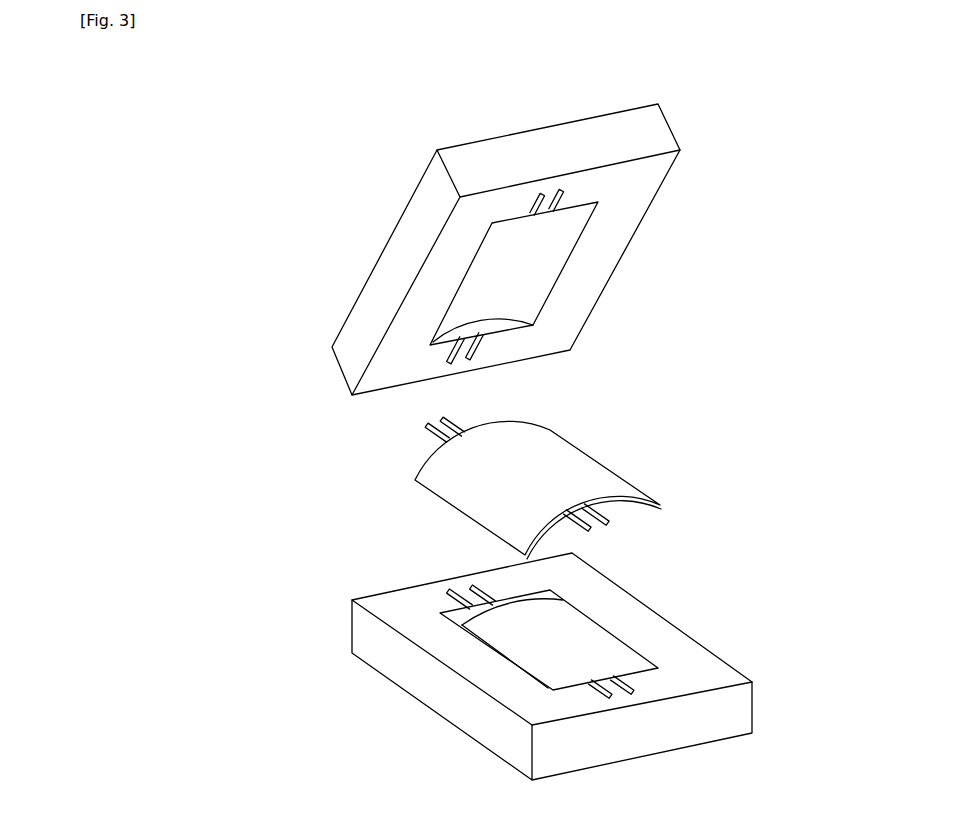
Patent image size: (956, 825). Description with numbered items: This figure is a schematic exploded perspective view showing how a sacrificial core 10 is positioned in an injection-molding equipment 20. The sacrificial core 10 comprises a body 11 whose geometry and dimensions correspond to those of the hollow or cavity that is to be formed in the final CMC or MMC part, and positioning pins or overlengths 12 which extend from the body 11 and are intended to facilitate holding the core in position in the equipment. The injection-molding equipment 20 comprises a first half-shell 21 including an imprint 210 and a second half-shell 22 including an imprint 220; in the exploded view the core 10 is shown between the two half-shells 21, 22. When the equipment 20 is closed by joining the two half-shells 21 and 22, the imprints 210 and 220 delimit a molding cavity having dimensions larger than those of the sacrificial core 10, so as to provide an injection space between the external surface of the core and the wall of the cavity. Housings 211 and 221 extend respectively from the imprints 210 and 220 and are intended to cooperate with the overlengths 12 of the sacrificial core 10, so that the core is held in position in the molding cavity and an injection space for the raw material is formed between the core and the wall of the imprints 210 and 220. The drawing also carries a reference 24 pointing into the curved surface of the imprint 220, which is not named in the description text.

The sacrificial core 10 is at (608, 435).
The body 11 is at (618, 475).
The positioning pins or overlengths 12 is at (458, 427).
The injection-molding equipment 20 is at (285, 137).
The first half-shell 21 is at (740, 706).
The second half-shell 22 is at (660, 130).
The curved recess surface 24 is at (497, 262).
The imprint 210 is at (573, 633).
The housings 211 is at (478, 588).
The imprint 220 is at (555, 245).
The housings 221 is at (558, 192).